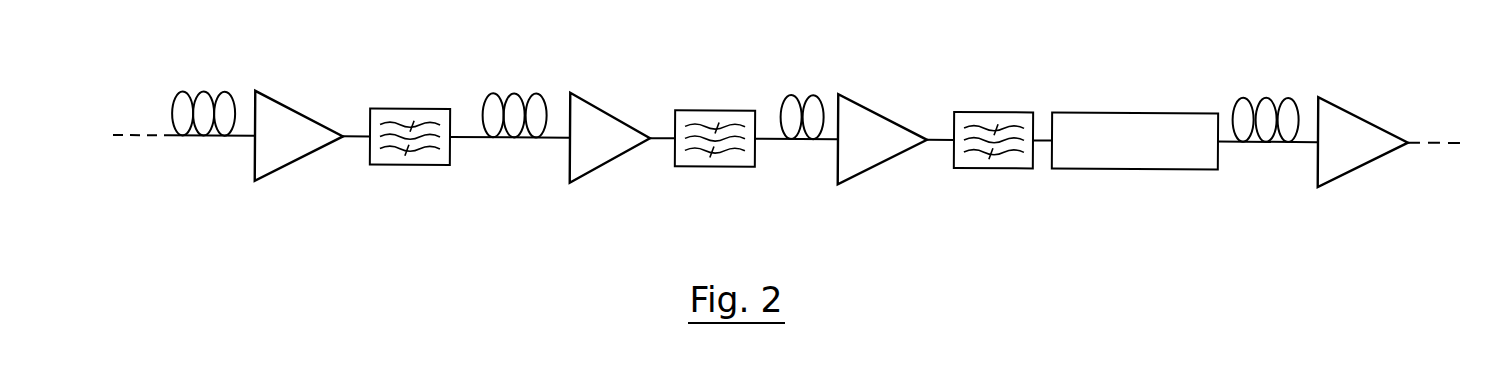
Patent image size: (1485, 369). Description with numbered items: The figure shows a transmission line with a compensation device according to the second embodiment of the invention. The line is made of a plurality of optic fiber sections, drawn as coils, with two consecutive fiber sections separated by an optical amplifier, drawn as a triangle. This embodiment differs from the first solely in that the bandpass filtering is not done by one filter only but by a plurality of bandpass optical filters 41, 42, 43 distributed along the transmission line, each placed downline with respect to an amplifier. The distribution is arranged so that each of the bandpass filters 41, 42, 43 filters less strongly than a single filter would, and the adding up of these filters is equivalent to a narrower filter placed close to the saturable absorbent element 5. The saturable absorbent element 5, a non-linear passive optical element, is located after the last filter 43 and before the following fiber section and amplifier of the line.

The bandpass optical filter 41 is at (400, 163).
The bandpass optical filter 42 is at (707, 163).
The bandpass optical filter 43 is at (992, 163).
The saturable absorbent element 5 is at (1120, 163).